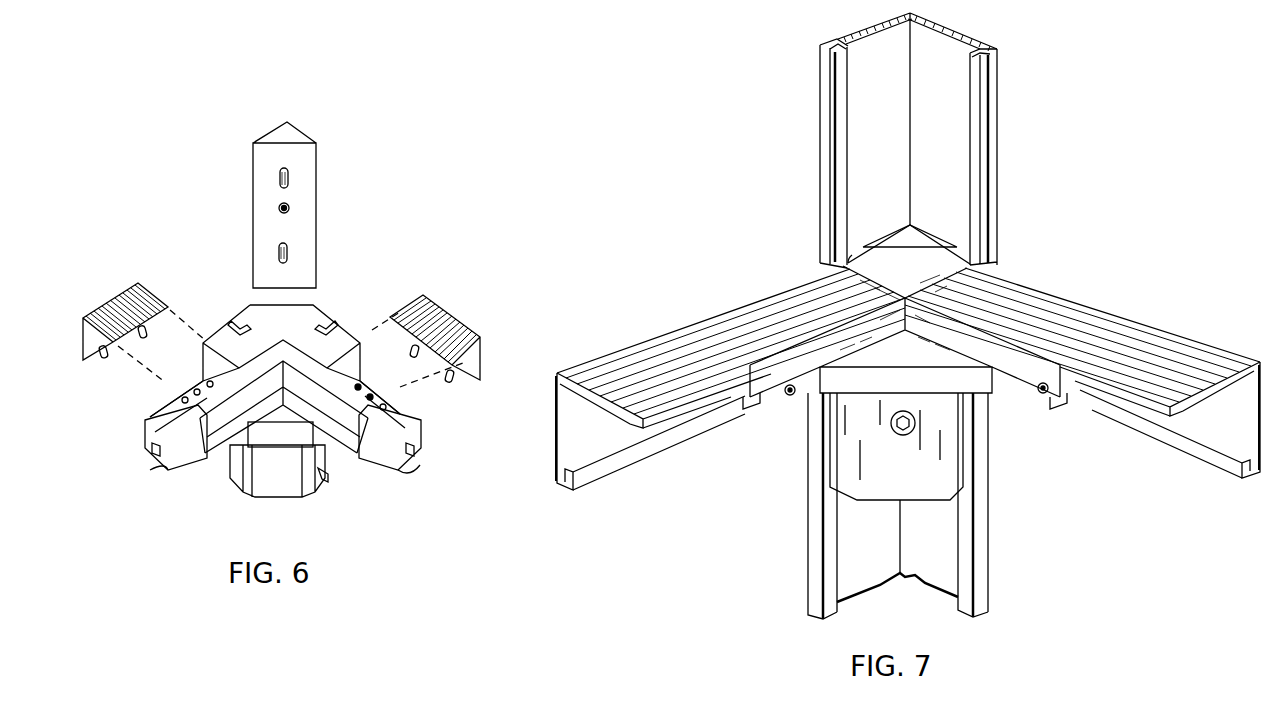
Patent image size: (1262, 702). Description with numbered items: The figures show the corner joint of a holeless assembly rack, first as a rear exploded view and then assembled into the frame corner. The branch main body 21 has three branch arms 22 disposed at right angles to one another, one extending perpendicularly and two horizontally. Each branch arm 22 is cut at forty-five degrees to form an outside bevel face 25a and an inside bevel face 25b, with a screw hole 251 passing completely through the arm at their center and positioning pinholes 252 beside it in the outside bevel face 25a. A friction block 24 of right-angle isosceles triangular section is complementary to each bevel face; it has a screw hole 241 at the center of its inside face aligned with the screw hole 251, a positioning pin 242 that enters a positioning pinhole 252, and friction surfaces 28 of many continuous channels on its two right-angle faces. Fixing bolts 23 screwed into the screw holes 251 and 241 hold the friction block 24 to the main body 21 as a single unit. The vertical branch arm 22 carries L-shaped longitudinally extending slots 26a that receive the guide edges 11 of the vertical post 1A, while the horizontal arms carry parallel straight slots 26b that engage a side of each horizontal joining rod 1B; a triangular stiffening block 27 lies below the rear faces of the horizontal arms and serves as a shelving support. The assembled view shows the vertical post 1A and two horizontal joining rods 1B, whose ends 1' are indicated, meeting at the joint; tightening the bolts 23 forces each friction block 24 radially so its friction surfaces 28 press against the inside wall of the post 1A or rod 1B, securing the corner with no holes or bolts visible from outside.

In FIG. 7, the vertical post 1A is at (821, 138).
In FIG. 7, the horizontal joining rod 1B is at (690, 318).
In FIG. 7, the frame member end 1' is at (900, 298).
In FIG. 7, the L-shaped guide edge 11 is at (847, 198).
In FIG. 6, the branch main body 21 is at (300, 318).
In FIG. 7, the branch main body 21 is at (935, 265).
In FIG. 6, the branch arm 22 is at (148, 445).
In FIG. 7, the branch arm 22 is at (860, 438).
In FIG. 7, the fixing bolt 23 is at (790, 396).
In FIG. 6, the friction block 24 is at (313, 155).
In FIG. 7, the friction block 24 is at (920, 232).
In FIG. 6, the screw hole 241 is at (279, 208).
In FIG. 6, the positioning pin 242 is at (284, 178).
In FIG. 6, the outside bevel face 25a is at (148, 410).
In FIG. 6, the inside bevel face 25b is at (185, 460).
In FIG. 7, the inside bevel face 25b is at (940, 467).
In FIG. 6, the screw hole 251 is at (198, 388).
In FIG. 6, the positioning pinhole 252 is at (206, 392).
In FIG. 6, the L-shaped longitudinally extending slot 26a is at (332, 322).
In FIG. 7, the L-shaped longitudinally extending slot 26a is at (858, 265).
In FIG. 6, the parallel straight slot 26b is at (165, 470).
In FIG. 7, the parallel straight slot 26b is at (745, 410).
In FIG. 6, the triangular stiffening block 27 is at (262, 465).
In FIG. 7, the triangular stiffening block 27 is at (885, 362).
In FIG. 6, the friction surface 28 is at (152, 305).